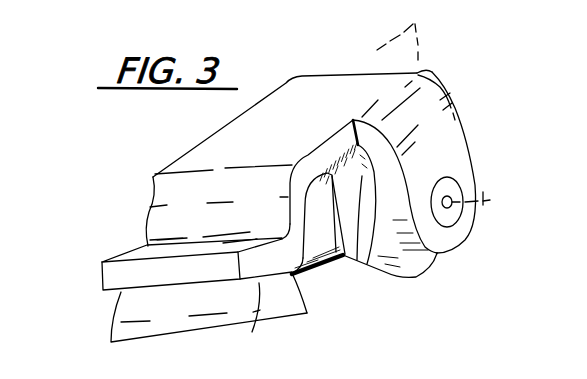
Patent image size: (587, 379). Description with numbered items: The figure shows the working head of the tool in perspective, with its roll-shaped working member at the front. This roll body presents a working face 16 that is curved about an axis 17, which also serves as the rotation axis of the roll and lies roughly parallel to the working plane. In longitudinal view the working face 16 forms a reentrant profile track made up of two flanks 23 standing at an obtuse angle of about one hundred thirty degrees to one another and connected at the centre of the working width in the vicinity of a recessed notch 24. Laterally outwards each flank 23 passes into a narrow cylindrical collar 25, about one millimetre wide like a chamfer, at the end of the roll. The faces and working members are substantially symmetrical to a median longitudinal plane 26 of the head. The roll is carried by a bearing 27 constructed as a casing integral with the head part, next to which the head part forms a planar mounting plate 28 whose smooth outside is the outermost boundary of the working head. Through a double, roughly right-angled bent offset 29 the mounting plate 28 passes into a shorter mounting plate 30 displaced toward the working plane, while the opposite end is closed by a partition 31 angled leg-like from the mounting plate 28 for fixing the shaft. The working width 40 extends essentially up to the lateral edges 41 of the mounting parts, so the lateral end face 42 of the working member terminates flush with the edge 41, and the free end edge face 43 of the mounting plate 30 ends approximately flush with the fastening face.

The working face 16 is at (351, 265).
The axis 17 is at (483, 192).
The flank 23 is at (341, 258).
The recessed notch 24 is at (331, 175).
The cylindrical collar 25 is at (369, 177).
The median longitudinal plane 26 is at (418, 34).
The bearing 27 is at (500, 97).
The mounting plate 28 is at (230, 137).
The bent offset 29 is at (157, 190).
The shorter mounting plate 30 is at (145, 252).
The partition 31 is at (432, 72).
The working width 40 is at (252, 330).
The lateral edge 41 is at (297, 228).
The lateral end face 42 is at (273, 308).
The free end edge face 43 is at (119, 276).